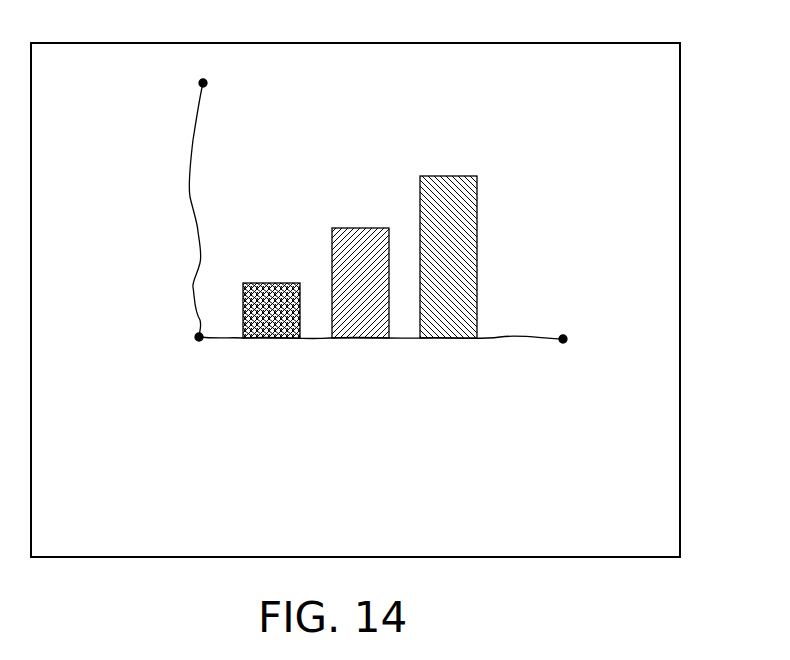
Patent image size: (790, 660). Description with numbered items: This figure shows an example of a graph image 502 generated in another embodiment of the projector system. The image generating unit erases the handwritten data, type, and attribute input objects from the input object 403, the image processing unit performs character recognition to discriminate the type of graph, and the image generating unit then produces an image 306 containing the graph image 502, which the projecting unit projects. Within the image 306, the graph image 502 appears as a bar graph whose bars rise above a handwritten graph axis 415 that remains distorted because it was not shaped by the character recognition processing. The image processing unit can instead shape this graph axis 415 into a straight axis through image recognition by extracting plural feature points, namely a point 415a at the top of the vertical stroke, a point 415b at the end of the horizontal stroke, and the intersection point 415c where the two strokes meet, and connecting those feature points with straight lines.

The image 306 is at (683, 73).
The input object 403 is at (207, 107).
The graph axis 415 is at (507, 336).
The point 415a is at (203, 83).
The point 415b is at (563, 339).
The intersection point 415c is at (199, 337).
The graph image 502 is at (508, 207).